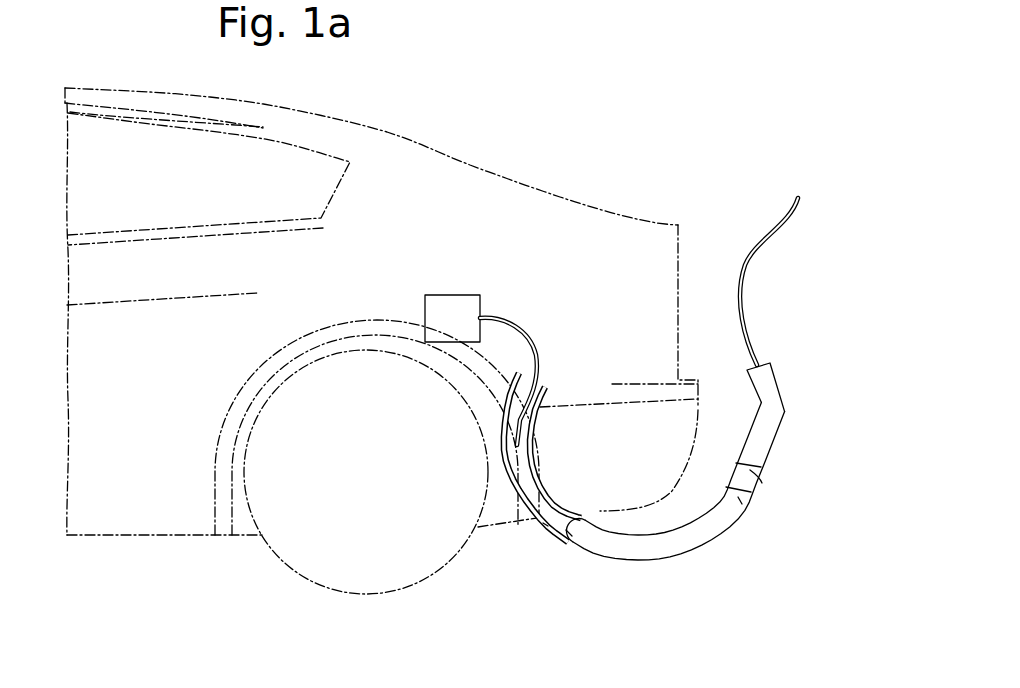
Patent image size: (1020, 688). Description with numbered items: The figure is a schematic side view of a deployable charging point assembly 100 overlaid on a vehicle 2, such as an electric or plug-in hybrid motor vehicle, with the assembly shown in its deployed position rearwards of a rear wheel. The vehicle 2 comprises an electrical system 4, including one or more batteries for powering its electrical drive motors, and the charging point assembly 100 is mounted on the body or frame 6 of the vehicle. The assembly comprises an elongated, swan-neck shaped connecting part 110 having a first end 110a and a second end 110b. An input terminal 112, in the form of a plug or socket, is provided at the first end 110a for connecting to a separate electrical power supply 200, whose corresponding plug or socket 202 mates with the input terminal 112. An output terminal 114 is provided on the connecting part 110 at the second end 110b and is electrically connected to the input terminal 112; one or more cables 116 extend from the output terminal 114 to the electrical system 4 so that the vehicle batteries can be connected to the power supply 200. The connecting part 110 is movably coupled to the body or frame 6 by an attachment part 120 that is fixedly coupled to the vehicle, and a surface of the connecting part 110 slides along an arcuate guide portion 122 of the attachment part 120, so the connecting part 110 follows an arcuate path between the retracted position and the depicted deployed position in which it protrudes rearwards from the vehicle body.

The vehicle 2 is at (590, 73).
The electrical system 4 is at (452, 295).
The body or frame 6 is at (567, 195).
The deployable charging point assembly 100 is at (662, 519).
The connecting part 110 is at (675, 540).
The first end 110a is at (741, 496).
The second end 110b is at (578, 546).
The input terminal 112 is at (750, 477).
The output terminal 114 is at (543, 523).
The cables 116 is at (540, 348).
The attachment part 120 is at (547, 390).
The guide portion 122 is at (507, 465).
The electrical power supply 200 is at (798, 198).
The plug or socket 202 is at (777, 381).